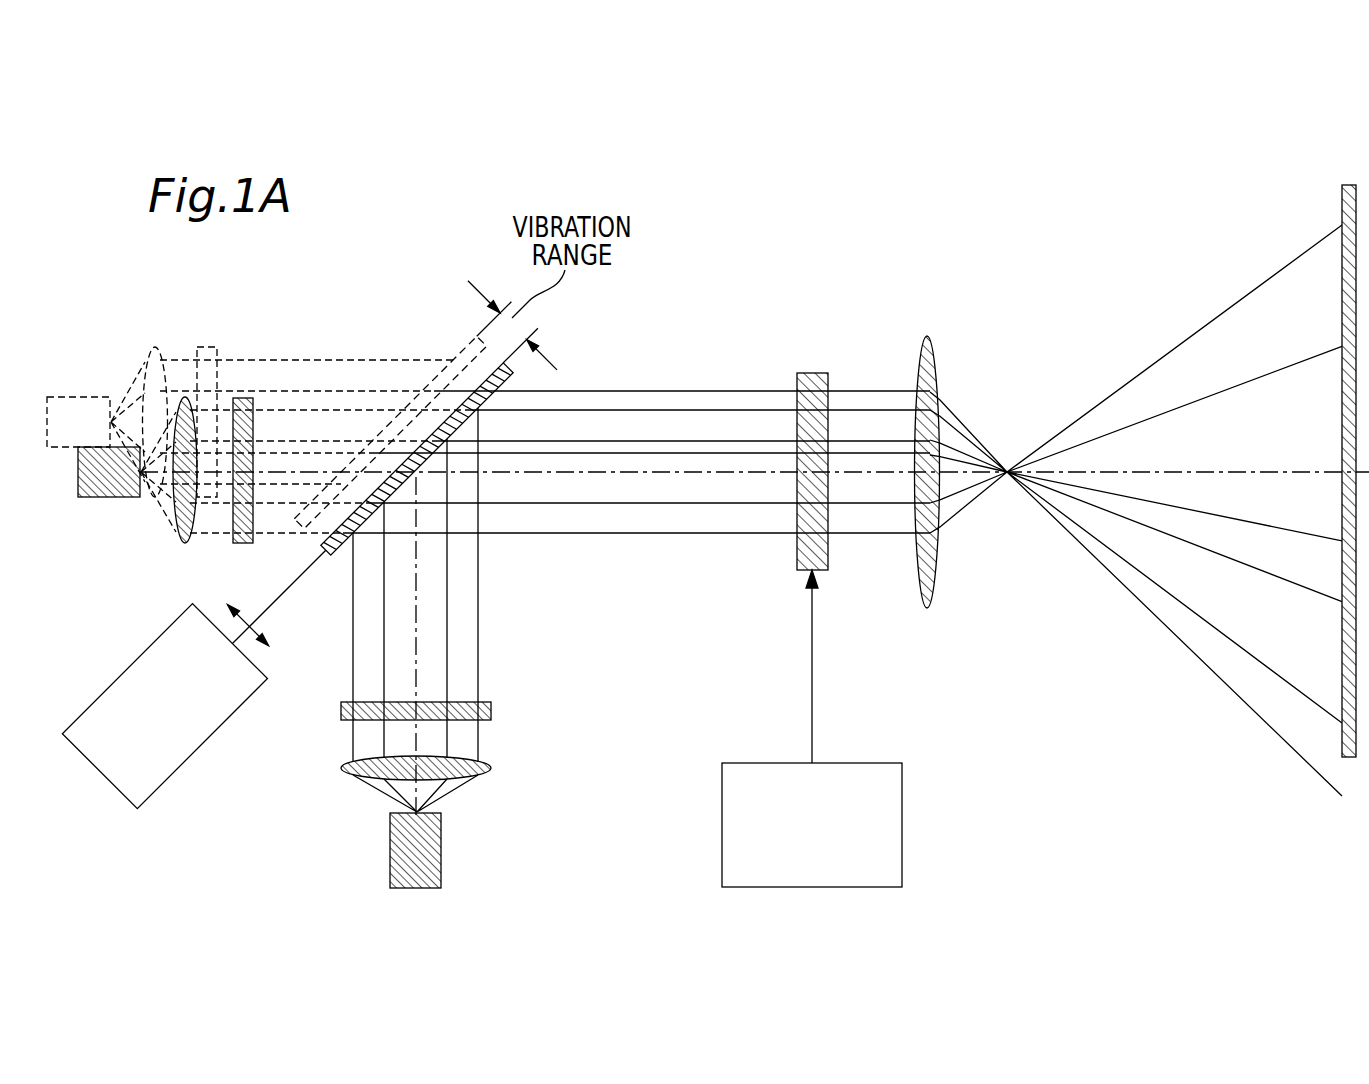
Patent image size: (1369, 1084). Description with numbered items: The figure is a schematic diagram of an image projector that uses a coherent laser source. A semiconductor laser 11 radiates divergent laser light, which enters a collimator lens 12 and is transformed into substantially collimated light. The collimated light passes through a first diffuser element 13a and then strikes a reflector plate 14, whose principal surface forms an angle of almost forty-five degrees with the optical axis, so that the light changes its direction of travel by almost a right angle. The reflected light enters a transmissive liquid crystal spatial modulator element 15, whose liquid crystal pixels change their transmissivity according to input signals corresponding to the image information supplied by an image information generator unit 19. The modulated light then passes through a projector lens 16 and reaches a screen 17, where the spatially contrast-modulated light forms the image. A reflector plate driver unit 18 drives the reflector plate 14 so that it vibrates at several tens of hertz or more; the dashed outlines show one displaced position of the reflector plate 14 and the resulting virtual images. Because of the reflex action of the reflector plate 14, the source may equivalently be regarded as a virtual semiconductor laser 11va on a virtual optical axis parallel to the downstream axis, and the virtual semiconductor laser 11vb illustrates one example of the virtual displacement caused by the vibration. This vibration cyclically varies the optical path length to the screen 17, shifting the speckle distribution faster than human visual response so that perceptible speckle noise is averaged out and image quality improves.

The semiconductor laser 11 is at (438, 848).
The virtual semiconductor laser 11va is at (103, 500).
The virtual semiconductor laser 11vb is at (72, 397).
The collimator lens 12 is at (492, 766).
The first diffuser element 13a is at (492, 708).
The reflector plate 14 is at (465, 403).
The transmissive liquid crystal spatial modulator element 15 is at (812, 373).
The projector lens 16 is at (935, 365).
The screen 17 is at (1342, 297).
The reflector plate driver unit 18 is at (160, 795).
The image information generator unit 19 is at (855, 763).